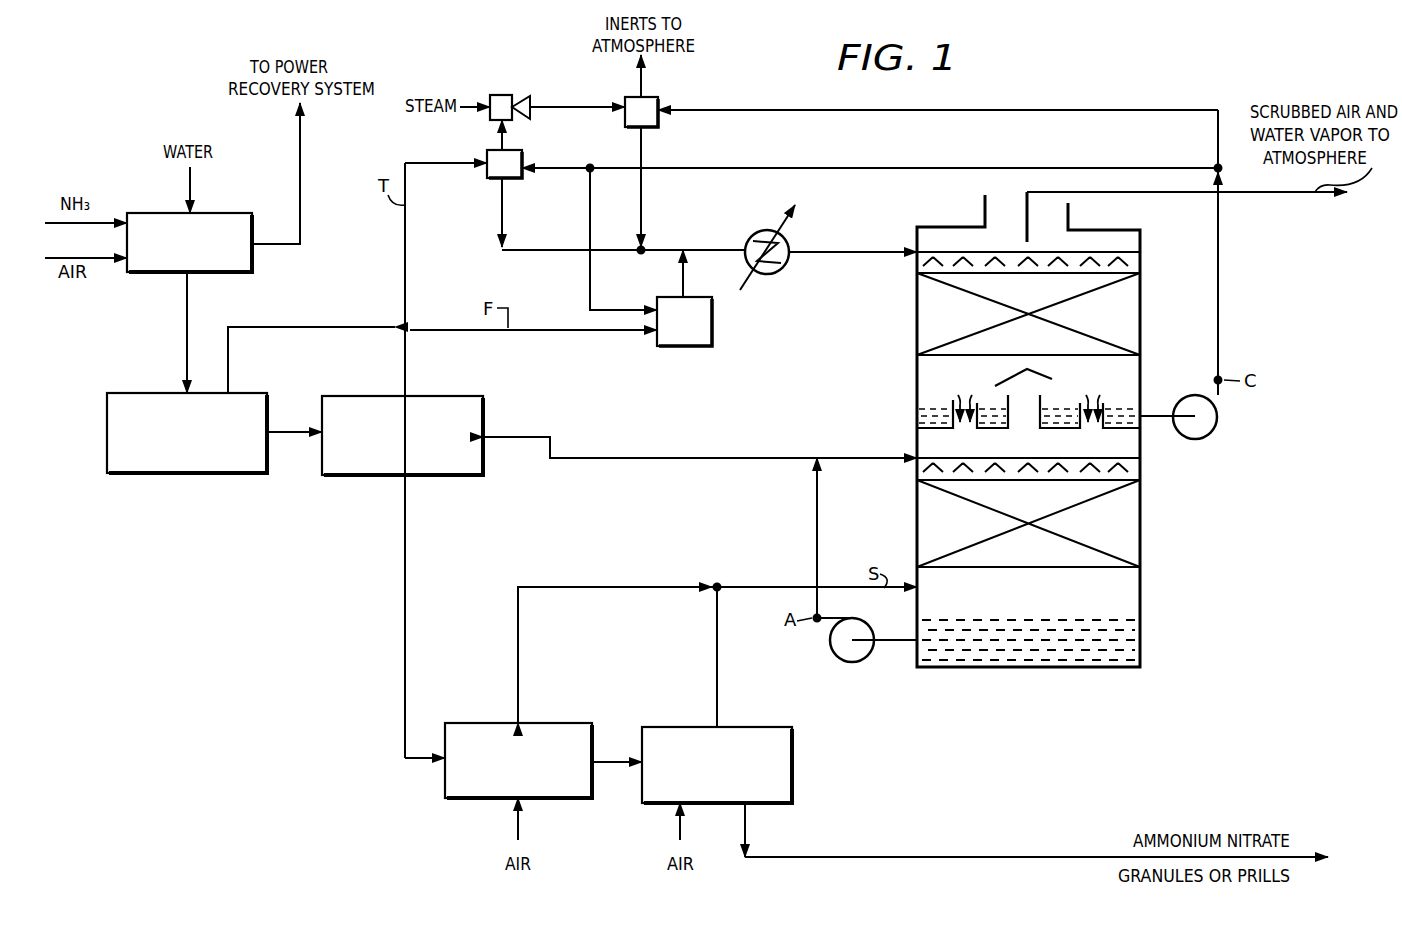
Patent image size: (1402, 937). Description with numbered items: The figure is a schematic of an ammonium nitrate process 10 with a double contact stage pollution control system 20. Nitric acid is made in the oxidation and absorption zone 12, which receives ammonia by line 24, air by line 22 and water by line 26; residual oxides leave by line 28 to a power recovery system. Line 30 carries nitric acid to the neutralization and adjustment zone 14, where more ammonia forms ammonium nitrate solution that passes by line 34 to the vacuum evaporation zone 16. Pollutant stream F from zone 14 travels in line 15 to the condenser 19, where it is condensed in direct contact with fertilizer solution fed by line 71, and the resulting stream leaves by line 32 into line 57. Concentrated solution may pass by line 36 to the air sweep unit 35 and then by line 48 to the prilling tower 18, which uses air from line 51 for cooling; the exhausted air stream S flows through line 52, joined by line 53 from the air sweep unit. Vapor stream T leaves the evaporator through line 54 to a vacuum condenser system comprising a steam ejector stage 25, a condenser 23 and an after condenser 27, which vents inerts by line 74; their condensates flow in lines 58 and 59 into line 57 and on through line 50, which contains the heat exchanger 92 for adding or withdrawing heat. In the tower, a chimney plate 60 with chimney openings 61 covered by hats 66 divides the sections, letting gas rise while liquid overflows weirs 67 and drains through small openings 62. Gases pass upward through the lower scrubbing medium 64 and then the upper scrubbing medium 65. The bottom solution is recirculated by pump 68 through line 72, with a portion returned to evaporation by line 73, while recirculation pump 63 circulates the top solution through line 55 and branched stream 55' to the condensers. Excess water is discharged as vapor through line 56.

The ammonium nitrate process 10 is at (110, 162).
The oxidation and absorption zone 12 is at (252, 258).
The neutralization and adjustment zone 14 is at (160, 392).
The line 15 is at (295, 327).
The evaporation zone 16 is at (456, 395).
The prilling tower 18 is at (778, 726).
The condenser 19 is at (712, 318).
The pollution control system 20 is at (1140, 598).
The line 22 is at (105, 264).
The condenser 23 is at (522, 153).
The line 24 is at (112, 226).
The steam ejector stage 25 is at (502, 95).
The line 26 is at (190, 180).
The after condenser 27 is at (658, 101).
The line 28 is at (300, 205).
The line 30 is at (187, 322).
The line 32 is at (683, 277).
The line 34 is at (290, 432).
The air sweep unit 35 is at (478, 722).
The line 36 is at (403, 668).
The line 48 is at (612, 748).
The line 50 is at (870, 253).
The line 51 is at (680, 828).
The line 52 is at (717, 687).
The line 53 is at (518, 680).
The line 54 is at (405, 305).
The line 55 is at (1237, 280).
The branched circulating stream 55' is at (870, 139).
The line 56 is at (1282, 198).
The line 57 is at (695, 246).
The line 58 is at (500, 222).
The line 59 is at (641, 212).
The chimney plate 60 is at (1120, 432).
The chimney openings 61 is at (1030, 424).
The small openings 62 is at (979, 453).
The recirculation pump 63 is at (1217, 427).
The lower scrubbing medium 64 is at (1117, 531).
The upper scrubbing medium 65 is at (1117, 324).
The hats 66 is at (1052, 379).
The weirs 67 is at (972, 394).
The pump 68 is at (852, 662).
The line 71 is at (590, 290).
The line 72 is at (870, 458).
The line 73 is at (700, 458).
The line 74 is at (641, 82).
The heat exchanger 92 is at (752, 236).